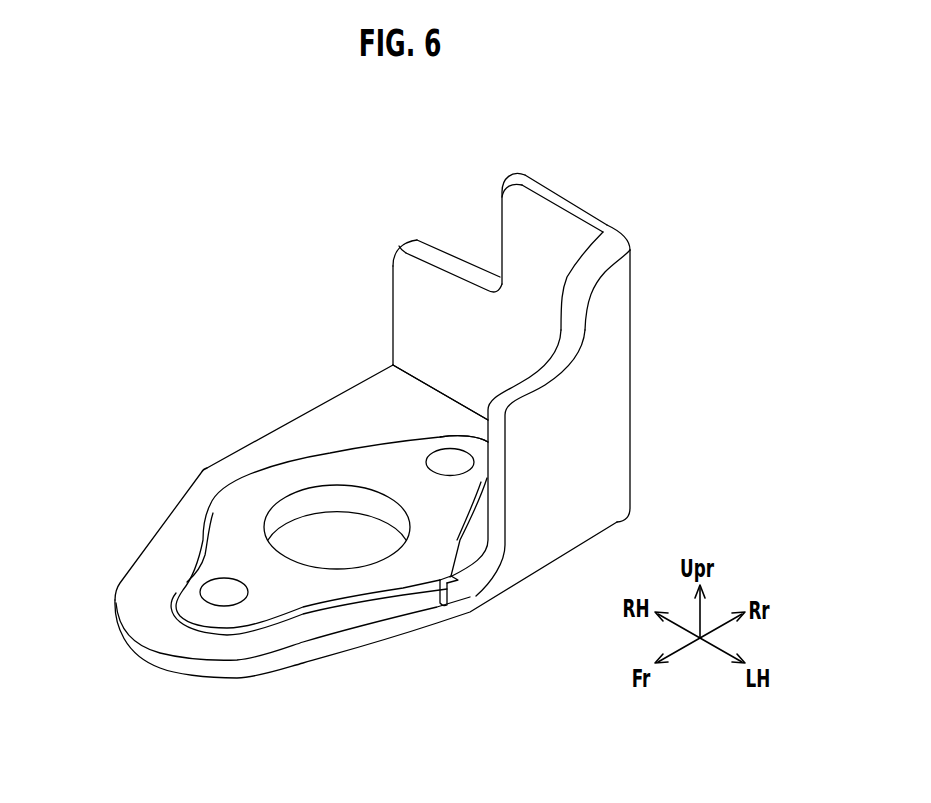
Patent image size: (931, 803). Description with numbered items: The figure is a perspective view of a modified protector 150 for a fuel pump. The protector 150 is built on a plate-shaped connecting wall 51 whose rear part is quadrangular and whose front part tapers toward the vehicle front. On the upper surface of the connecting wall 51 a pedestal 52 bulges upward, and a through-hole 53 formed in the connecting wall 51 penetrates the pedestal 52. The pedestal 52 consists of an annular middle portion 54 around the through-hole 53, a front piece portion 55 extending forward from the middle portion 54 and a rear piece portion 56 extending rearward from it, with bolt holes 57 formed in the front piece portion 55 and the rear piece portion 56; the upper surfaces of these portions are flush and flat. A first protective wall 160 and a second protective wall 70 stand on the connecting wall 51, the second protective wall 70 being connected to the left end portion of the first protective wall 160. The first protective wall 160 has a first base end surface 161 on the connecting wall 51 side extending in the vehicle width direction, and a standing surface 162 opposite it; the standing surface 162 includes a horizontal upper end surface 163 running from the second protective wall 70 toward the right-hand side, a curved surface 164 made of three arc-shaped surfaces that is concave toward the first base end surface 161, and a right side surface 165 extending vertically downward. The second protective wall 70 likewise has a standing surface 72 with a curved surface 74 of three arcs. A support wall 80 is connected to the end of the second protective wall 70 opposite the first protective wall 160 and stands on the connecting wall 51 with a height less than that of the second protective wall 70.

The protector 150 is at (372, 426).
The connecting wall 51 is at (342, 600).
The pedestal 52 is at (329, 560).
The through-hole 53 is at (337, 527).
The middle portion 54 is at (300, 421).
The front piece portion 55 is at (161, 534).
The rear piece portion 56 is at (466, 407).
The bolt holes 57 is at (337, 499).
The second protective wall 70 is at (531, 386).
The standing surface 72 is at (580, 276).
The curved surface 74 is at (517, 452).
The support wall 80 is at (484, 552).
The first protective wall 160 is at (564, 188).
The first base end surface 161 is at (440, 381).
The standing surface 162 is at (500, 212).
The upper end surface 163 is at (632, 217).
The curved surface 164 is at (454, 256).
The right side surface 165 is at (372, 272).